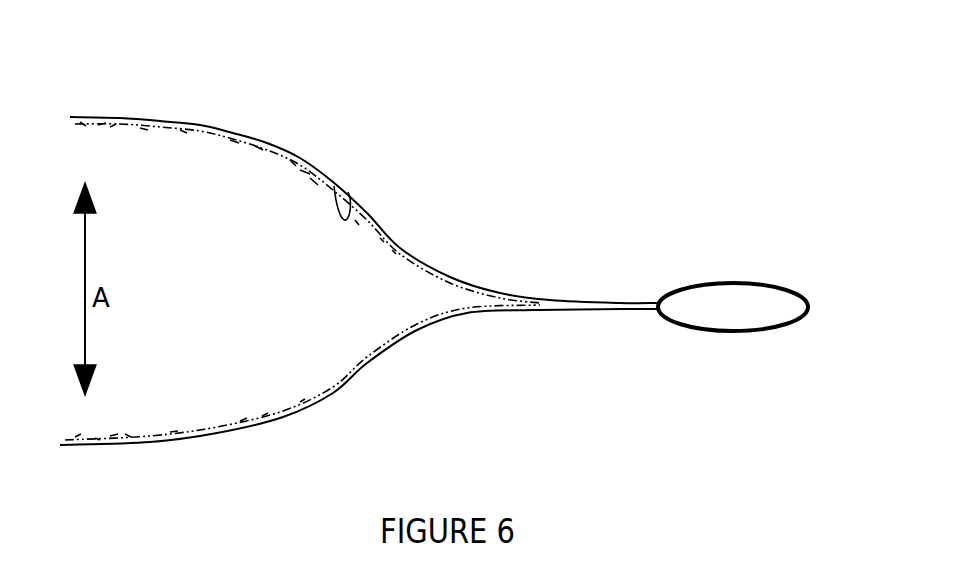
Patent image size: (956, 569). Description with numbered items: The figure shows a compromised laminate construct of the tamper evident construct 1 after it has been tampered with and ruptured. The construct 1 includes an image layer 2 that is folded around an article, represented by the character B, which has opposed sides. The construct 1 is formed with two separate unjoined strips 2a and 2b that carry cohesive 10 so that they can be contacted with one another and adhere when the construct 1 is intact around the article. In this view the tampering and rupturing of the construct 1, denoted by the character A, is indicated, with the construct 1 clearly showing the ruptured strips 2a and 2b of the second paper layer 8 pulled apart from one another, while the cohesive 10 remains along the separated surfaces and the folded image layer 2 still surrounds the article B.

The tamper evident construct 1 is at (628, 250).
The image layer 2 is at (725, 285).
The strip 2a is at (122, 115).
The strip 2b is at (125, 447).
The second paper layer 8 is at (136, 128).
The cohesive 10 is at (232, 133).